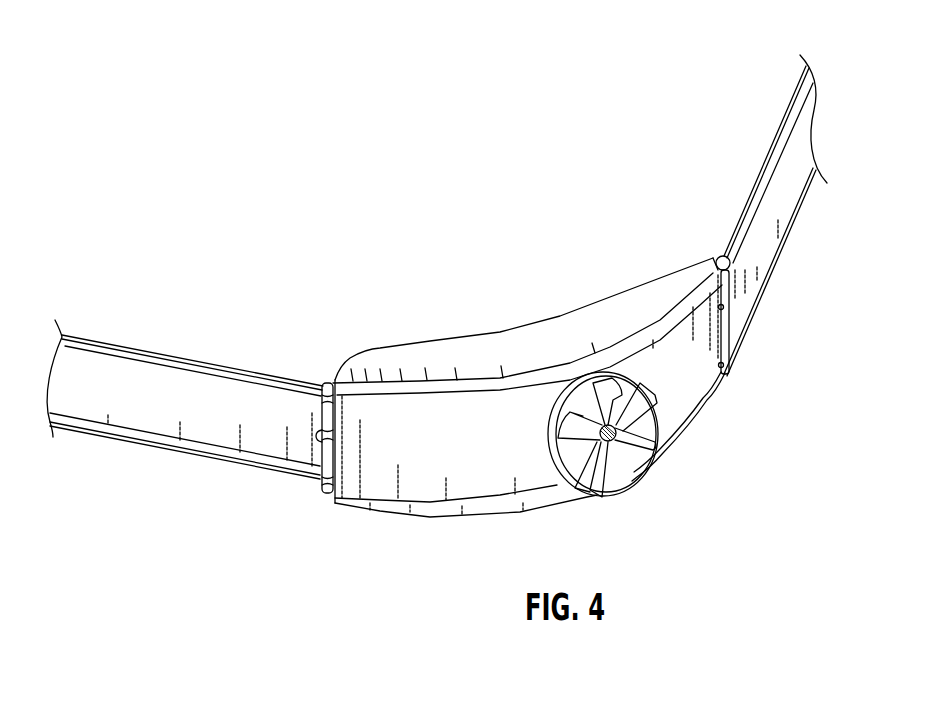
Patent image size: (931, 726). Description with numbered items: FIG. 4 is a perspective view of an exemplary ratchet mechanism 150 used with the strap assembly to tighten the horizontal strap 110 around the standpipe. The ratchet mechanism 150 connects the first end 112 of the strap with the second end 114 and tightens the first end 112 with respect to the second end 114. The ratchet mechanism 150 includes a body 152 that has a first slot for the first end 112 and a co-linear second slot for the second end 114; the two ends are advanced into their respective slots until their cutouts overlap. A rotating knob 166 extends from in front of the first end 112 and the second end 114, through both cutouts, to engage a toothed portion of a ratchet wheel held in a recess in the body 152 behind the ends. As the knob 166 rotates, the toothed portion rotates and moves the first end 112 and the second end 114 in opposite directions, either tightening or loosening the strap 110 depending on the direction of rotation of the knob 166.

The horizontal strap 110 is at (153, 352).
The first end 112 is at (323, 384).
The second end 114 is at (720, 254).
The ratchet mechanism 150 is at (592, 302).
The body 152 is at (478, 347).
The rotating knob 166 is at (612, 472).